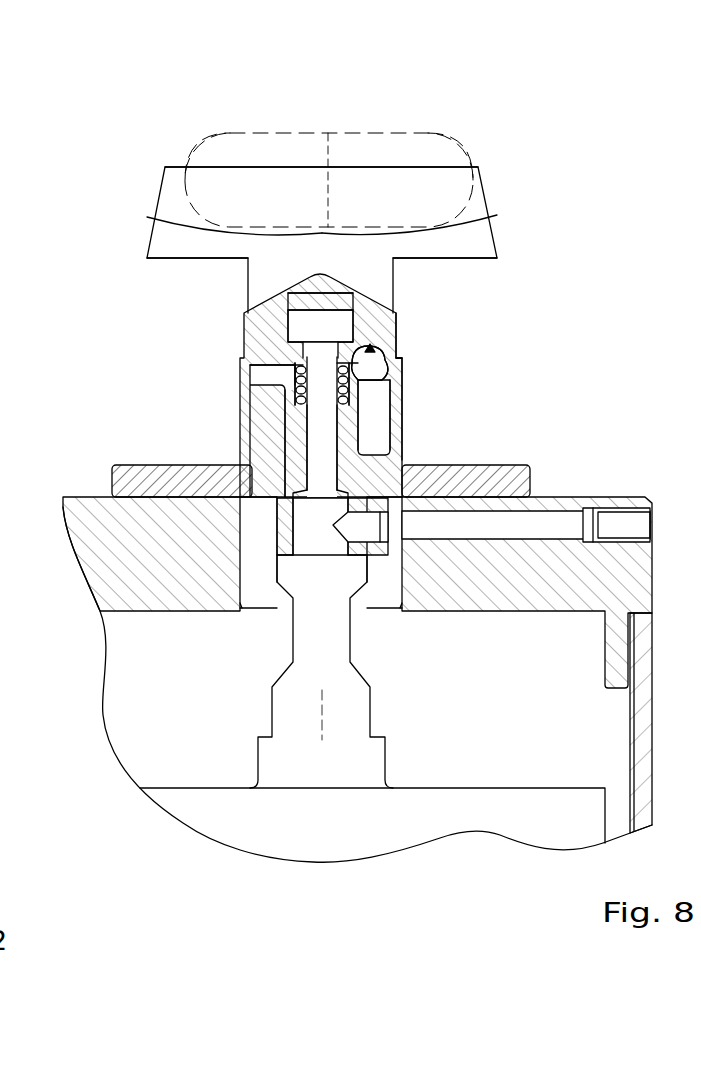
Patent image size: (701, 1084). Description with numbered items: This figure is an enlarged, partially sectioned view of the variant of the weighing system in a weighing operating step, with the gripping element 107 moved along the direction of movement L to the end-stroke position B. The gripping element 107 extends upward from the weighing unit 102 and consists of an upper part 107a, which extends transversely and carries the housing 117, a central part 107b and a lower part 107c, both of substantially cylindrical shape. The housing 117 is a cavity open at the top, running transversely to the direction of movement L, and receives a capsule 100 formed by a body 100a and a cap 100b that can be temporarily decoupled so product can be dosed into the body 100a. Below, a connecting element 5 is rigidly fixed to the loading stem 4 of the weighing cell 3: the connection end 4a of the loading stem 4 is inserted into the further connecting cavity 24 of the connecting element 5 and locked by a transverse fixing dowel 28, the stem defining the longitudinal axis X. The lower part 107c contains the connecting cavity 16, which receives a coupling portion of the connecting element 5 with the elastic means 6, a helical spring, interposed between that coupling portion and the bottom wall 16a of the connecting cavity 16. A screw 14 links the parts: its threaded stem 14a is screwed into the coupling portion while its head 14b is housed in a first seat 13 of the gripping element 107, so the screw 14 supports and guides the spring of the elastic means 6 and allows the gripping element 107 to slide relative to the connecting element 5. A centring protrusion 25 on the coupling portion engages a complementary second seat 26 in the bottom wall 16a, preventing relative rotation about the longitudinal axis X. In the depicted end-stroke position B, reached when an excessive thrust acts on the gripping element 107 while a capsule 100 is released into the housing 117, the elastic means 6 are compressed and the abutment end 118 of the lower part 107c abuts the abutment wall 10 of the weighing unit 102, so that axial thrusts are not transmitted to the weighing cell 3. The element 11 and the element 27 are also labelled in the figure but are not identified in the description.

The housing 117 is at (178, 154).
The cap 100b is at (247, 197).
The capsule 100 is at (299, 135).
The body 100a is at (368, 153).
The gripping element 107 is at (380, 252).
The valve device 11 is at (512, 173).
The upper part 107a is at (182, 232).
The central part 107b is at (455, 300).
The first seat 13 is at (355, 320).
The second seat 26 is at (372, 352).
The head 14b is at (305, 327).
The centring protrusion 25 is at (387, 353).
The bottom wall 16a is at (268, 363).
The elastic means 6 is at (403, 388).
The spring 27 is at (300, 408).
The connecting element 5 is at (347, 420).
The threaded stem 14a is at (317, 422).
The abutment end 118 is at (410, 462).
The connecting cavity 16 is at (253, 420).
The abutment wall 10 is at (520, 480).
The lower part 107c is at (243, 453).
The screw 14 is at (320, 447).
The connection end 4a is at (308, 542).
The transverse fixing dowel 28 is at (370, 530).
The further connecting cavity 24 is at (293, 522).
The loading stem 4 is at (365, 755).
The weighing cell 3 is at (217, 808).
The weighing unit 102 is at (458, 850).
The longitudinal axis X is at (325, 713).
The direction of movement L is at (690, 198).
The end-stroke position B is at (615, 387).